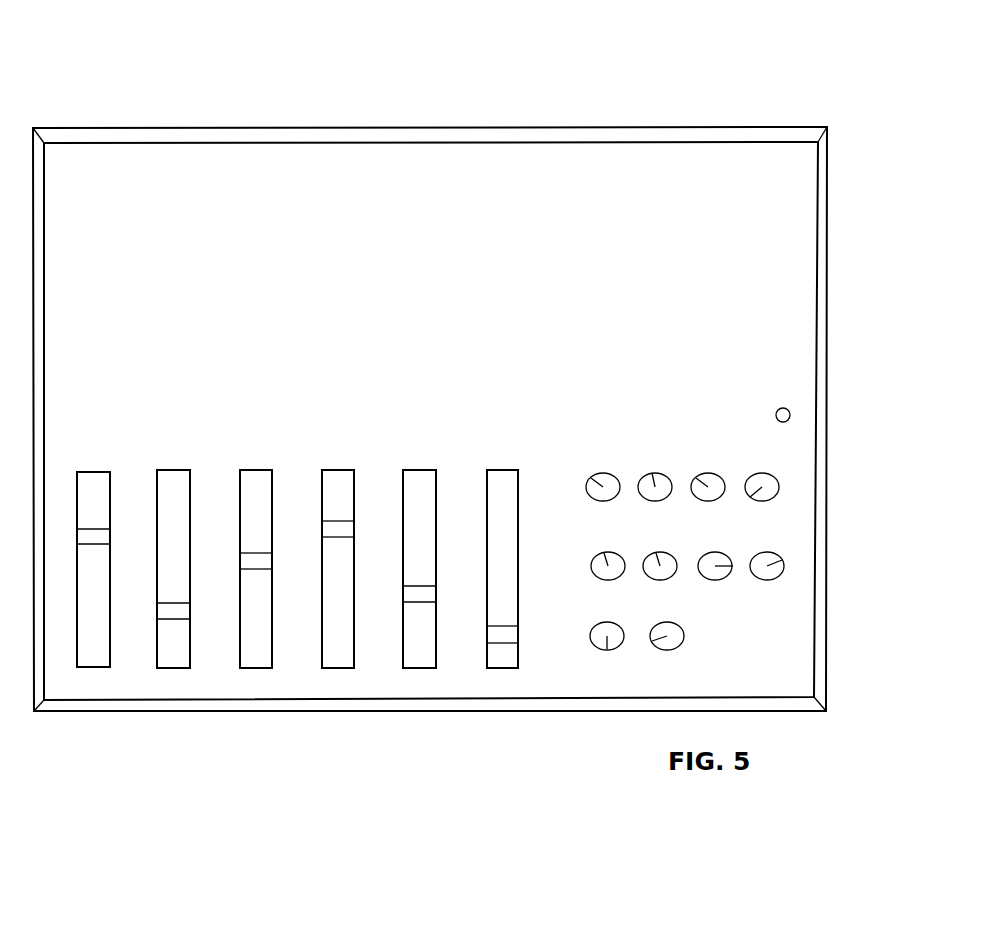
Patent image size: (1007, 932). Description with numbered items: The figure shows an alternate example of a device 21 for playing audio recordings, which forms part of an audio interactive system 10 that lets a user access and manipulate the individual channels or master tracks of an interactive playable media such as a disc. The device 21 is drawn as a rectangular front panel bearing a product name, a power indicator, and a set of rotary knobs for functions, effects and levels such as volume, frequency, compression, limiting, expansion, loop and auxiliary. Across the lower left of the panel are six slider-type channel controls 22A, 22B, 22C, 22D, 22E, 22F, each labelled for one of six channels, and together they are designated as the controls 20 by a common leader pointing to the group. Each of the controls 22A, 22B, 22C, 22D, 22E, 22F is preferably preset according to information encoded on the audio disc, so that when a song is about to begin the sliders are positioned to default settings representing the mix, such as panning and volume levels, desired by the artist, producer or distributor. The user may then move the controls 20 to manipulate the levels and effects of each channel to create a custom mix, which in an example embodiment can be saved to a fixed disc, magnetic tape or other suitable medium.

The audio interactive system 10 is at (522, 93).
The device 21 is at (827, 340).
The control 20 is at (298, 678).
The channel control 22A is at (173, 892).
The channel control 22B is at (175, 892).
The channel control 22C is at (178, 890).
The channel control 22D is at (180, 888).
The channel control 22E is at (182, 888).
The channel control 22F is at (183, 888).